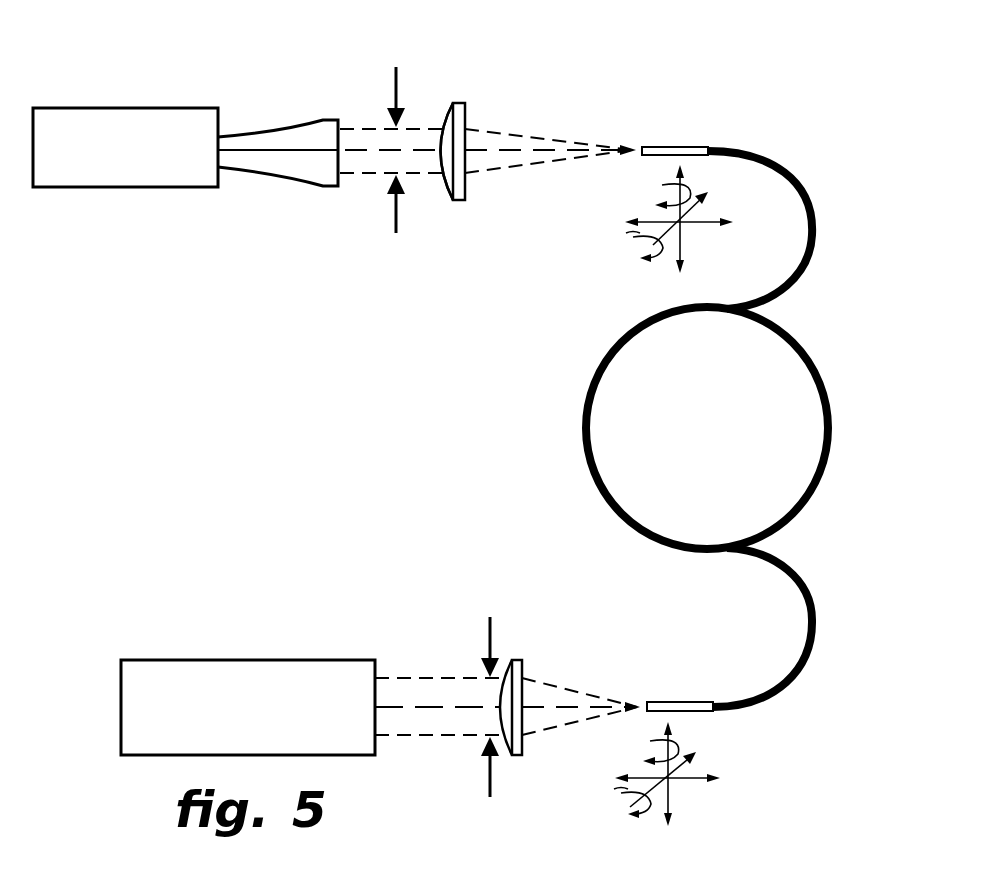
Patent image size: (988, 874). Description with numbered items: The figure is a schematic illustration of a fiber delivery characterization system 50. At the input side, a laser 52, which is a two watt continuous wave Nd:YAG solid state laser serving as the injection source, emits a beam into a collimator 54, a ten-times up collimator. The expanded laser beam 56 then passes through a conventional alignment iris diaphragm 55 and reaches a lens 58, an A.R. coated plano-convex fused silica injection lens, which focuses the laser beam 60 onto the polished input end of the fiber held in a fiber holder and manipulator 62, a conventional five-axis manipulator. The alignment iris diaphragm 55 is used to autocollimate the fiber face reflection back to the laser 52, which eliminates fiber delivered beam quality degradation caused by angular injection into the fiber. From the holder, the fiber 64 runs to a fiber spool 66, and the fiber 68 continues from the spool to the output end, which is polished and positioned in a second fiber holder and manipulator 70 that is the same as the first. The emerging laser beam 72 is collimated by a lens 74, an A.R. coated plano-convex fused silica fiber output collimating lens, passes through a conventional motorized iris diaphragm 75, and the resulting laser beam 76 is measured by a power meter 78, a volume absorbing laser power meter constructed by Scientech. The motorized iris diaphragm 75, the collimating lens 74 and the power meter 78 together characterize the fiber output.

The fiber delivery characterization system 50 is at (366, 372).
The laser 52 is at (142, 107).
The collimator 54 is at (270, 174).
The alignment iris diaphragm 55 is at (393, 80).
The laser beam 56 is at (417, 128).
The lens 58 is at (450, 195).
The laser beam 60 is at (555, 137).
The fiber holder and manipulator 62 is at (663, 146).
The fiber 64 is at (787, 173).
The fiber spool 66 is at (585, 430).
The fiber 68 is at (797, 683).
The fiber holder and manipulator 70 is at (685, 701).
The laser beam 72 is at (570, 688).
The lens 74 is at (522, 757).
The motorized iris diaphragm 75 is at (487, 630).
The laser beam 76 is at (422, 736).
The power meter 78 is at (238, 659).